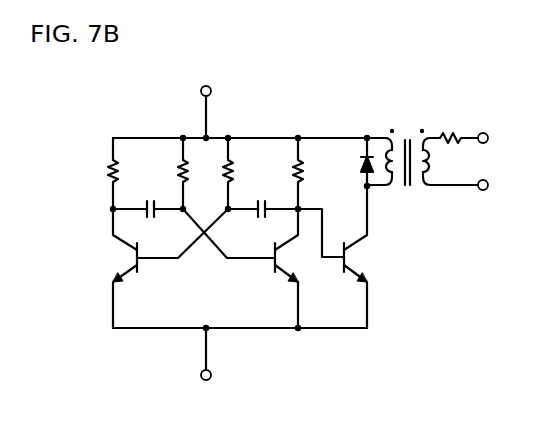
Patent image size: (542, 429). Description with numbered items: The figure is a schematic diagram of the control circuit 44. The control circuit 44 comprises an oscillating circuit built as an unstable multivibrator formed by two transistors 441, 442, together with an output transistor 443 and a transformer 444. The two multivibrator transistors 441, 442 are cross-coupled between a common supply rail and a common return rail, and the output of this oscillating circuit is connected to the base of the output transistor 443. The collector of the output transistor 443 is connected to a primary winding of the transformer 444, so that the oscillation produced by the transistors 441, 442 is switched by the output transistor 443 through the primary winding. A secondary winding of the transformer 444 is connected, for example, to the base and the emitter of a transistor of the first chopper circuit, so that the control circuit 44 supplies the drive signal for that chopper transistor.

The control circuit 44 is at (301, 123).
The transistor 441 is at (139, 262).
The transistor 442 is at (273, 270).
The output transistor 443 is at (346, 270).
The transformer 444 is at (411, 133).